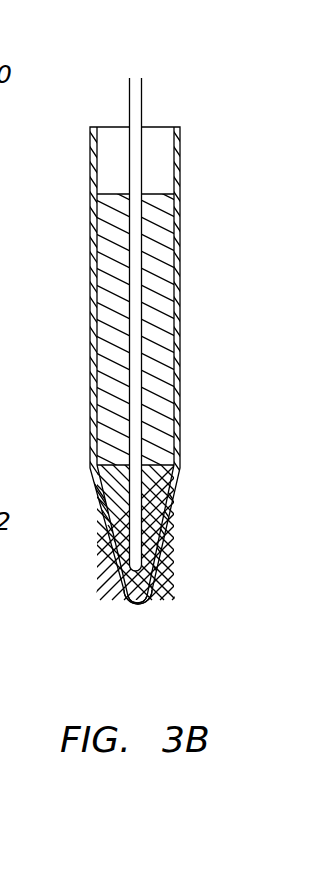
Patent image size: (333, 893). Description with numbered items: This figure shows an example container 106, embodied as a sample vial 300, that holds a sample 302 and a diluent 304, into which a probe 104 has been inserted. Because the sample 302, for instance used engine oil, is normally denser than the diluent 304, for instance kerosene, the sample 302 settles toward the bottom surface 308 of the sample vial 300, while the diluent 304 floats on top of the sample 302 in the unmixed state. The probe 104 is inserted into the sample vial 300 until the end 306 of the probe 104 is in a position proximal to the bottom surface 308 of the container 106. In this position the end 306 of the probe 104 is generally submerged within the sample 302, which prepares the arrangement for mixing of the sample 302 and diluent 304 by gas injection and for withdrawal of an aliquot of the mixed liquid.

The sample vial 300 is at (193, 115).
The container 106 is at (88, 121).
The probe 104 is at (138, 178).
The diluent 304 is at (153, 320).
The sample 302 is at (170, 527).
The end of the probe 306 is at (157, 572).
The bottom surface 308 is at (123, 595).